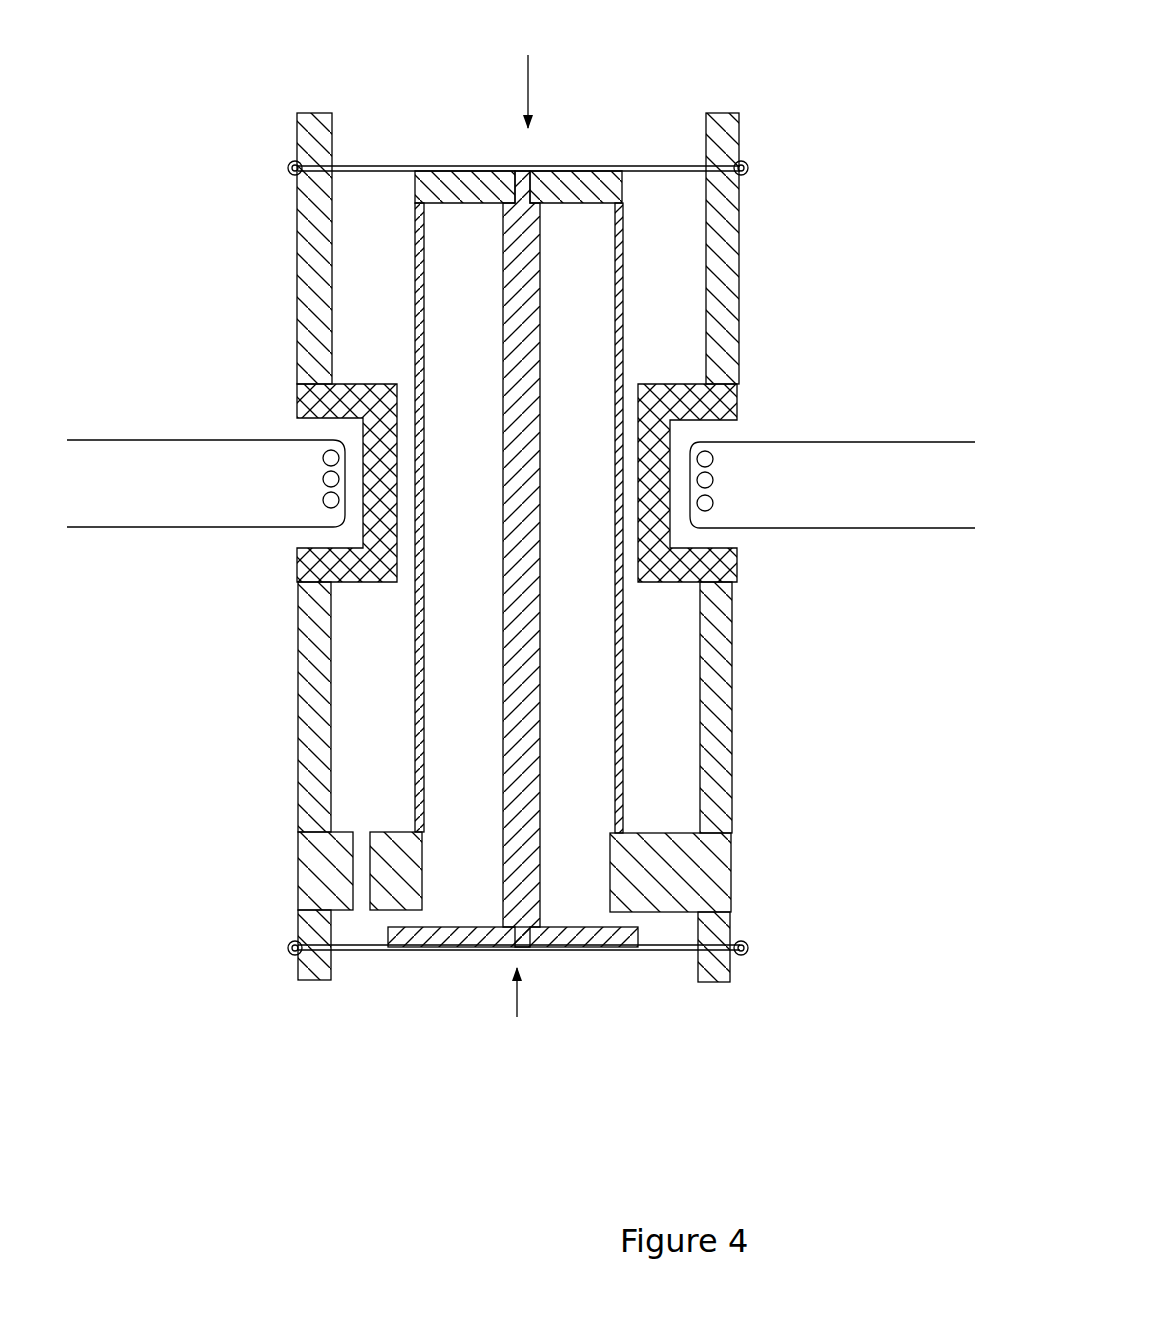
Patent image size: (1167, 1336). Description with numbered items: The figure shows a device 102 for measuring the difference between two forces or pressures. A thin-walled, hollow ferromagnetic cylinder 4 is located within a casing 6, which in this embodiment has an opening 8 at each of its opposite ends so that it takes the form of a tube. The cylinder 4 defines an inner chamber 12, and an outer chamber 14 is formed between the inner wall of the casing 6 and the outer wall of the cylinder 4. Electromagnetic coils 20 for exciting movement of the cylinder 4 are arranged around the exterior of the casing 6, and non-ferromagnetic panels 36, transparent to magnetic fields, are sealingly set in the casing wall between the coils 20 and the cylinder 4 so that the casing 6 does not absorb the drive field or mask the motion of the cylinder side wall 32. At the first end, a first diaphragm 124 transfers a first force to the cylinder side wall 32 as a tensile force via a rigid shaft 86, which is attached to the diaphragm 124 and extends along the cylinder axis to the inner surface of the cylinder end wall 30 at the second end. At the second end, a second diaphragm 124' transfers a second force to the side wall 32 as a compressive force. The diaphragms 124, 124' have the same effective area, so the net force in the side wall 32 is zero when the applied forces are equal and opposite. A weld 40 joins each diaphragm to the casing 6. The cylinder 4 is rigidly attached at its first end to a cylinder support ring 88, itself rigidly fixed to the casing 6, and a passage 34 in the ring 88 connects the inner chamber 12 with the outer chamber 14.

The device for measuring the difference between two forces or pressures 102 is at (283, 1094).
The opening 8 is at (672, 108).
The outer chamber 14 is at (352, 215).
The casing 6 is at (720, 741).
The panels 36 is at (297, 388).
The electromagnetic coils 20 is at (146, 537).
The cylinder end wall 30 is at (608, 190).
The second diaphragm 124' is at (519, 99).
The first diaphragm 124 is at (519, 993).
The weld 40 is at (288, 165).
The ferromagnetic cylinder 4 is at (417, 633).
The cylinder side wall 32 is at (622, 306).
The rigid shaft 86 is at (527, 660).
The inner chamber 12 is at (583, 810).
The passage 34 is at (360, 838).
The cylinder support ring 88 is at (712, 890).